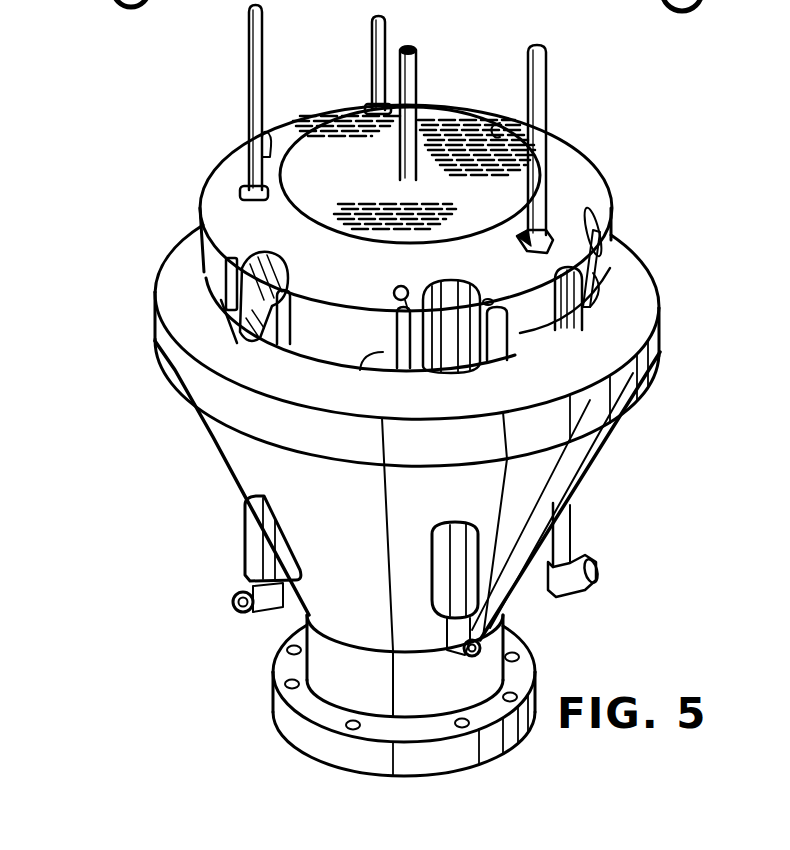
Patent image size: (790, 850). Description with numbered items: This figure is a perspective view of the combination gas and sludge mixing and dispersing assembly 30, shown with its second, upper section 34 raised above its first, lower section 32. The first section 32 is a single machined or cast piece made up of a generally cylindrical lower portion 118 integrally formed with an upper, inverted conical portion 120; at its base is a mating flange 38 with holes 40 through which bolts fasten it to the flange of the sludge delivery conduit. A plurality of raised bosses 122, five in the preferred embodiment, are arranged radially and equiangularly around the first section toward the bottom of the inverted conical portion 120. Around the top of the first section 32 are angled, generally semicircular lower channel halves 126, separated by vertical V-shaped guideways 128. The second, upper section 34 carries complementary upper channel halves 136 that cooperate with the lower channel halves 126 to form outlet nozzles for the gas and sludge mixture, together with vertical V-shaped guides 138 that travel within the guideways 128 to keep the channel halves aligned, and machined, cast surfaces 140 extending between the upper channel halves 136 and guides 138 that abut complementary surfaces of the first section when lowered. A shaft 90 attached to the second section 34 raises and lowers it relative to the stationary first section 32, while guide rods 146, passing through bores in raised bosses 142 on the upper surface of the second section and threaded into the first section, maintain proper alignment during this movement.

The combination gas and sludge mixing and dispersing assembly 30 is at (130, 246).
The first, lower section 32 is at (170, 358).
The second, upper section 34 is at (577, 170).
The mating flange 38 is at (284, 716).
The holes 40 is at (286, 682).
The shaft 90 is at (418, 76).
The cylindrical lower portion 118 is at (337, 697).
The inverted conical portion 120 is at (240, 468).
The raised bosses 122 is at (246, 540).
The lower channel halves 126 is at (231, 334).
The vertical V-shaped guideways 128 is at (238, 310).
The upper channel halves 136 is at (242, 160).
The vertical V-shaped guides 138 is at (292, 322).
The machined, cast surfaces 140 is at (490, 279).
The raised bosses 142 is at (372, 110).
The guide rods 146 is at (249, 52).